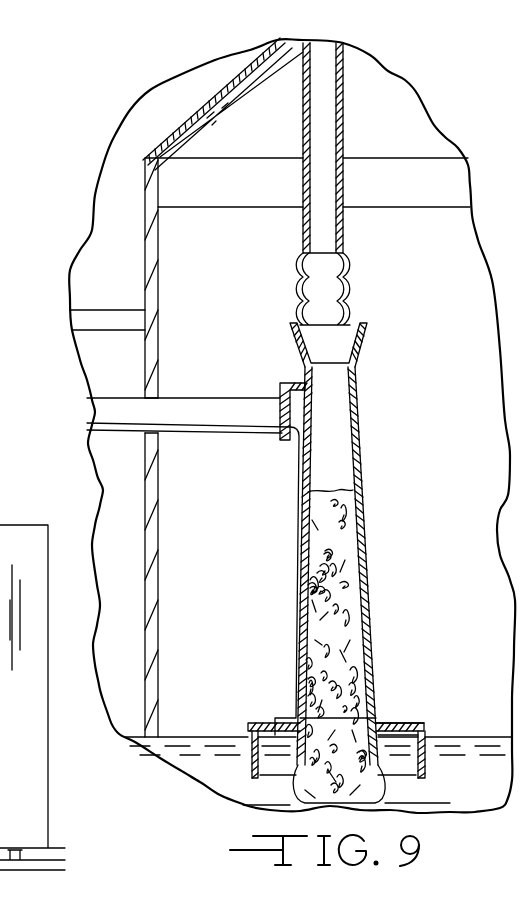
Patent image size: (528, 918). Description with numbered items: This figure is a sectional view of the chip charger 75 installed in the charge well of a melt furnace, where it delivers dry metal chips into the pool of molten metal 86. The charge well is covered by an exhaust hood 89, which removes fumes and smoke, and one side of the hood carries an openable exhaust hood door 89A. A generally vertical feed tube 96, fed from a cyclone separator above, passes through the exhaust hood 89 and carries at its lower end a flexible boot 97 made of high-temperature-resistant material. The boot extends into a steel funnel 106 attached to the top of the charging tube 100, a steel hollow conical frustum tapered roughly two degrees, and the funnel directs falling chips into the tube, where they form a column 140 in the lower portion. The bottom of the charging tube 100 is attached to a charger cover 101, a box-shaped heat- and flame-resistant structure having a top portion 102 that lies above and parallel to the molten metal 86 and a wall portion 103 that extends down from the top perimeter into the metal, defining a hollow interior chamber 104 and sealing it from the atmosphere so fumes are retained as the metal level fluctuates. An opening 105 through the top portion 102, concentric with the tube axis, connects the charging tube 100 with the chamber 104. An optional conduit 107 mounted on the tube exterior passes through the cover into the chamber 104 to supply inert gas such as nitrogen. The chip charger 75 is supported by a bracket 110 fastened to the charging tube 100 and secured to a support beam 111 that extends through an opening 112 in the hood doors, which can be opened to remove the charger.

The chip charger 75 is at (383, 473).
The molten metal 86 is at (487, 796).
The exhaust hood 89 is at (178, 128).
The exhaust hood door 89A is at (145, 262).
The feed tube 96 is at (343, 108).
The flexible boot 97 is at (350, 290).
The charging tube 100 is at (363, 558).
The charger cover 101 is at (450, 670).
The cover top portion 102 is at (415, 720).
The wall portion 103 is at (255, 775).
The hollow interior chamber 104 is at (248, 727).
The opening 105 is at (450, 670).
The funnel 106 is at (367, 343).
The conduit 107 is at (295, 560).
The bracket 110 is at (295, 386).
The support beam 111 is at (215, 410).
The opening 112 is at (161, 395).
The column 140 is at (345, 535).